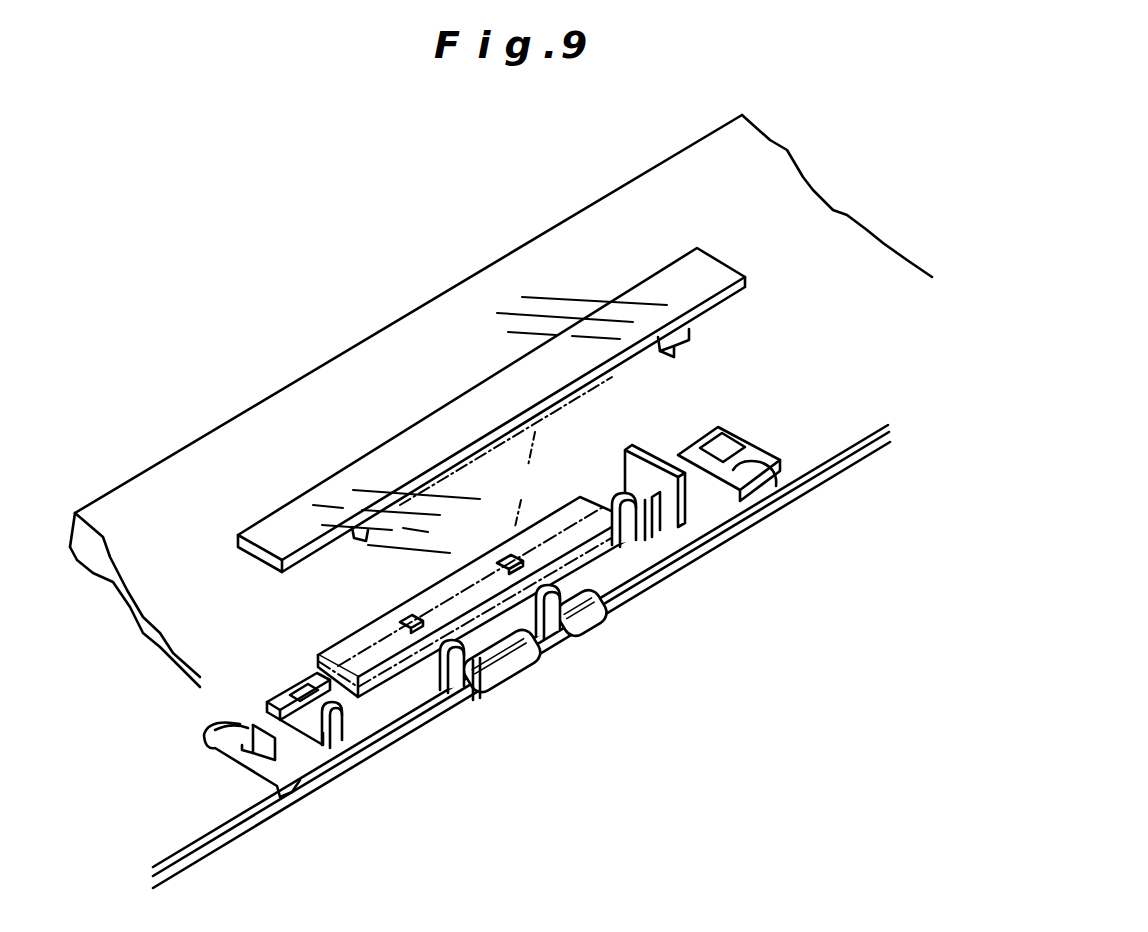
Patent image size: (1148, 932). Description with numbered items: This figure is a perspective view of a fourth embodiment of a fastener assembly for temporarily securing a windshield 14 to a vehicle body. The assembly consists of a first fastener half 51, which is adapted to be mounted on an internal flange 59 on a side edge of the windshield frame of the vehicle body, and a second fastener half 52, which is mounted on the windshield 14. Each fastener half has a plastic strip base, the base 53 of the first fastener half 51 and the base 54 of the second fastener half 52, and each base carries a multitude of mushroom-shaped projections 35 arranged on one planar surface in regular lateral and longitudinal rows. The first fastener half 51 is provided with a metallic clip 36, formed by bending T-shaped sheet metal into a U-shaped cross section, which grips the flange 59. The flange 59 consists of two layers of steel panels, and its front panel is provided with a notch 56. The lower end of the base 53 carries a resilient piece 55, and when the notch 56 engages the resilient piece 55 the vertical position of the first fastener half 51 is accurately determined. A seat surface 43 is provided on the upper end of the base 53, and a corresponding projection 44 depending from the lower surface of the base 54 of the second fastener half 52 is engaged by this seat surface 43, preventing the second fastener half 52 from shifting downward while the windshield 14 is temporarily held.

The windshield 14 is at (360, 348).
The base 54 is at (718, 276).
The second fastener half 52 is at (727, 313).
The projection 44 is at (685, 349).
The mushroom-shaped projections 35 is at (447, 486).
The seat surface 43 is at (627, 470).
The first fastener half 51 is at (647, 567).
The clip 36 is at (513, 673).
The base 53 is at (378, 707).
The resilient piece 55 is at (253, 753).
The notch 56 is at (229, 725).
The internal flange 59 is at (247, 823).